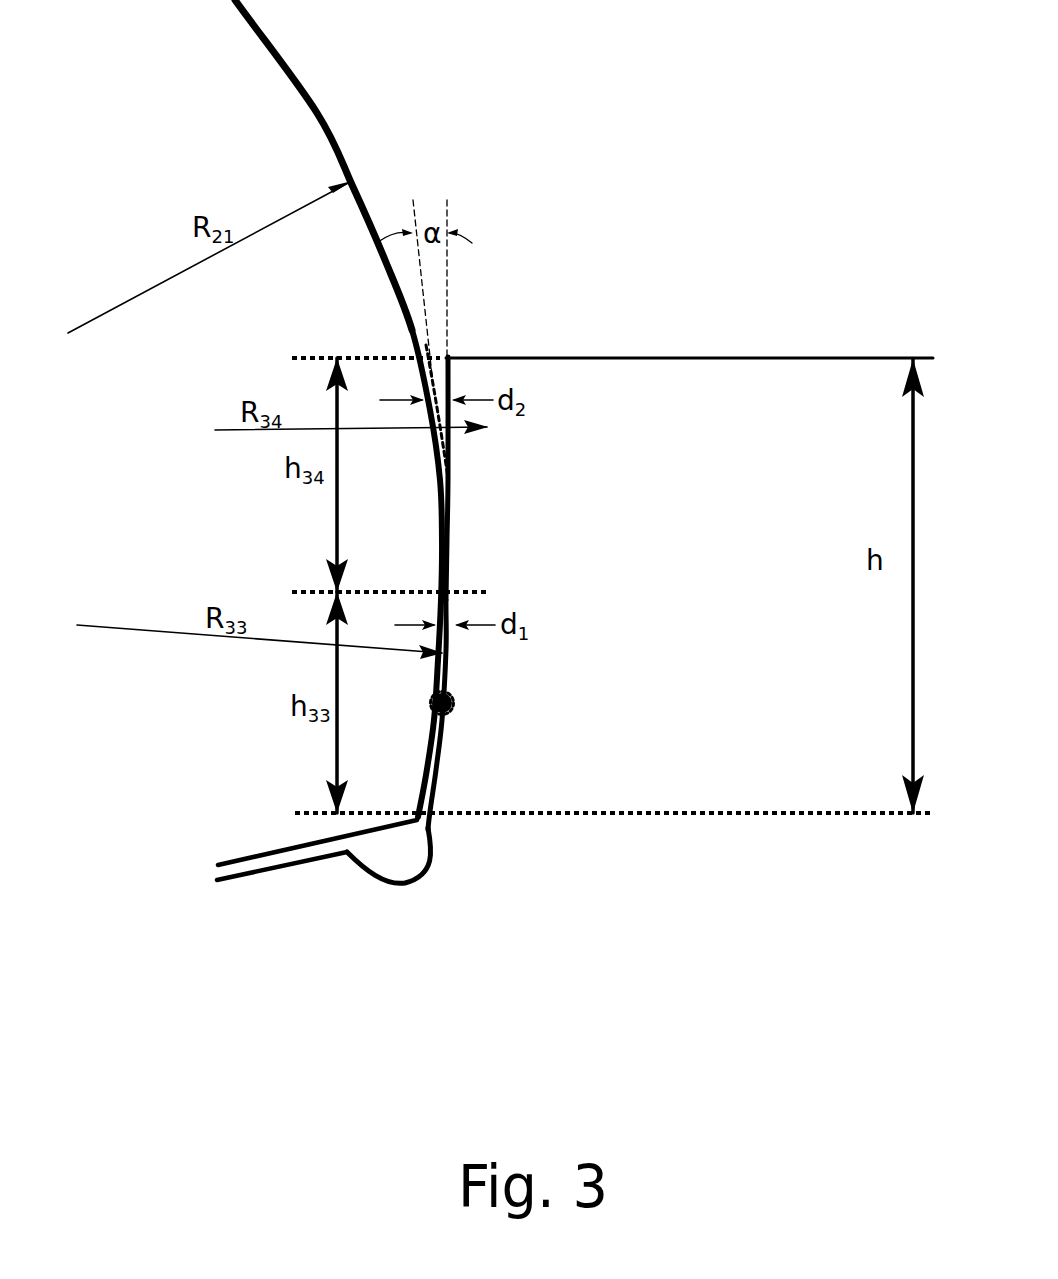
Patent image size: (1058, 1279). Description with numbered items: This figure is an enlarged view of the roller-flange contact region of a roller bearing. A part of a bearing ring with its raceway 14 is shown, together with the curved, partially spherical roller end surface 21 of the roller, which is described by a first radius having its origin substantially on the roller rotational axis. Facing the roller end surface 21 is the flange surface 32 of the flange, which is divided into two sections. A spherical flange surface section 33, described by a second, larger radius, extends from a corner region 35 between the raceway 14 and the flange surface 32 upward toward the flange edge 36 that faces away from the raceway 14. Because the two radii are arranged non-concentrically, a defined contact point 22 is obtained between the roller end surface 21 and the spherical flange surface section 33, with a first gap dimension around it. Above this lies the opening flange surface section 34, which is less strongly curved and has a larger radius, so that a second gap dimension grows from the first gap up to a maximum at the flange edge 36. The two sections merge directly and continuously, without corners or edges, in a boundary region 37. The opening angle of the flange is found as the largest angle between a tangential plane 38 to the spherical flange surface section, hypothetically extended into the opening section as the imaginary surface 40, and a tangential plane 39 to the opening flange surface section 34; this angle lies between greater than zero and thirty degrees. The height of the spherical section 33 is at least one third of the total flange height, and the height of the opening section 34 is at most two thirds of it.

The raceway 14 is at (235, 880).
The roller end surface 21 is at (318, 117).
The contact point 22 is at (462, 703).
The flange surface 32 is at (554, 580).
The spherical flange surface section 33 is at (440, 745).
The opening flange surface section 34 is at (452, 463).
The corner region 35 is at (385, 857).
The flange edge 36 is at (448, 355).
The boundary region 37 is at (452, 592).
The tangential plane 38 is at (430, 333).
The tangential plane 39 is at (448, 300).
The hypothetically extended spherical flange surface section 40 is at (425, 358).